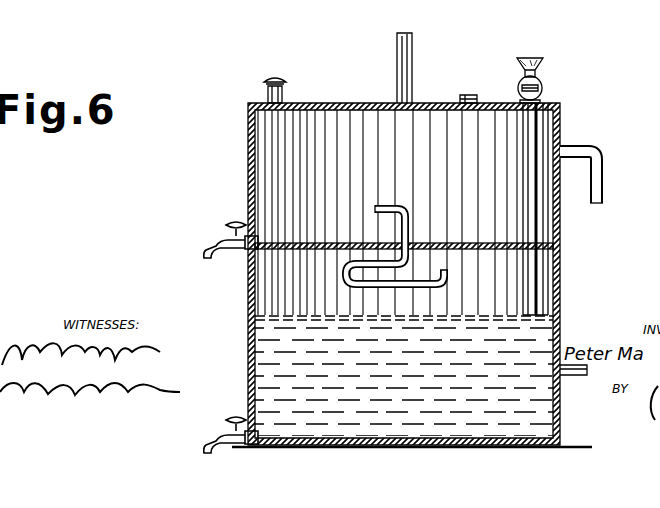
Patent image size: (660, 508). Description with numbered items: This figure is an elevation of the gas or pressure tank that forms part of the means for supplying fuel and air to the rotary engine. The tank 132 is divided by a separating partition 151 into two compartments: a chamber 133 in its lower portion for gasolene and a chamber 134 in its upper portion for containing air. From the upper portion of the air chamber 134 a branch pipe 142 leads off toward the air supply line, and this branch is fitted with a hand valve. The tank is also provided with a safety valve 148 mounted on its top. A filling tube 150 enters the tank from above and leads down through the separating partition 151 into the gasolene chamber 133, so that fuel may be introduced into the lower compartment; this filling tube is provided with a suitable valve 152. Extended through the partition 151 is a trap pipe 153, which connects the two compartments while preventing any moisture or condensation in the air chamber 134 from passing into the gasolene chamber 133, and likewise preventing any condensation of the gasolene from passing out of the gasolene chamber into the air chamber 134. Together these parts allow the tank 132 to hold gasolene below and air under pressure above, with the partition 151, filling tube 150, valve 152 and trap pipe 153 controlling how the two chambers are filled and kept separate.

The tank 132 is at (560, 247).
The chamber 133 is at (545, 291).
The chamber 134 is at (404, 289).
The branch pipe 142 is at (463, 95).
The safety valve 148 is at (266, 95).
The filling tube 150 is at (541, 72).
The separating partition 151 is at (444, 243).
The valve 152 is at (543, 87).
The trap pipe 153 is at (410, 212).